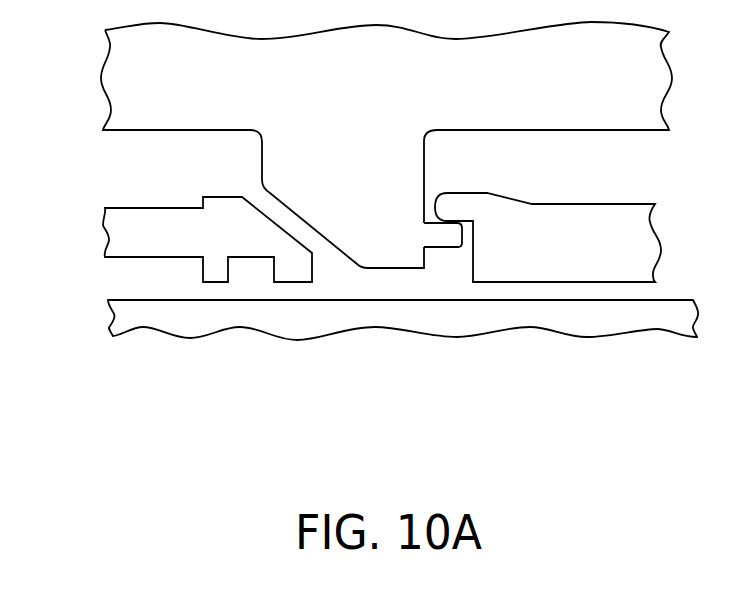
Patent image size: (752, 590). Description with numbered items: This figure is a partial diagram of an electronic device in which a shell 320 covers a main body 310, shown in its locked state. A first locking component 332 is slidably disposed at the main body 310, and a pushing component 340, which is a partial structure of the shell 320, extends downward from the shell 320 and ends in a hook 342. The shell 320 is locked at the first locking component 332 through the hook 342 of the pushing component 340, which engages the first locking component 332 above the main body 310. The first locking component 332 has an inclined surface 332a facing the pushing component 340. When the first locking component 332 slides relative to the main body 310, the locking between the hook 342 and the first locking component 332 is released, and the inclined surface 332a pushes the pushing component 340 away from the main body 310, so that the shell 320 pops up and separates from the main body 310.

The main body 310 is at (127, 312).
The shell 320 is at (132, 72).
The first locking component 332 is at (563, 248).
The inclined surface 332a is at (281, 213).
The pushing component 340 is at (275, 158).
The hook 342 is at (445, 233).